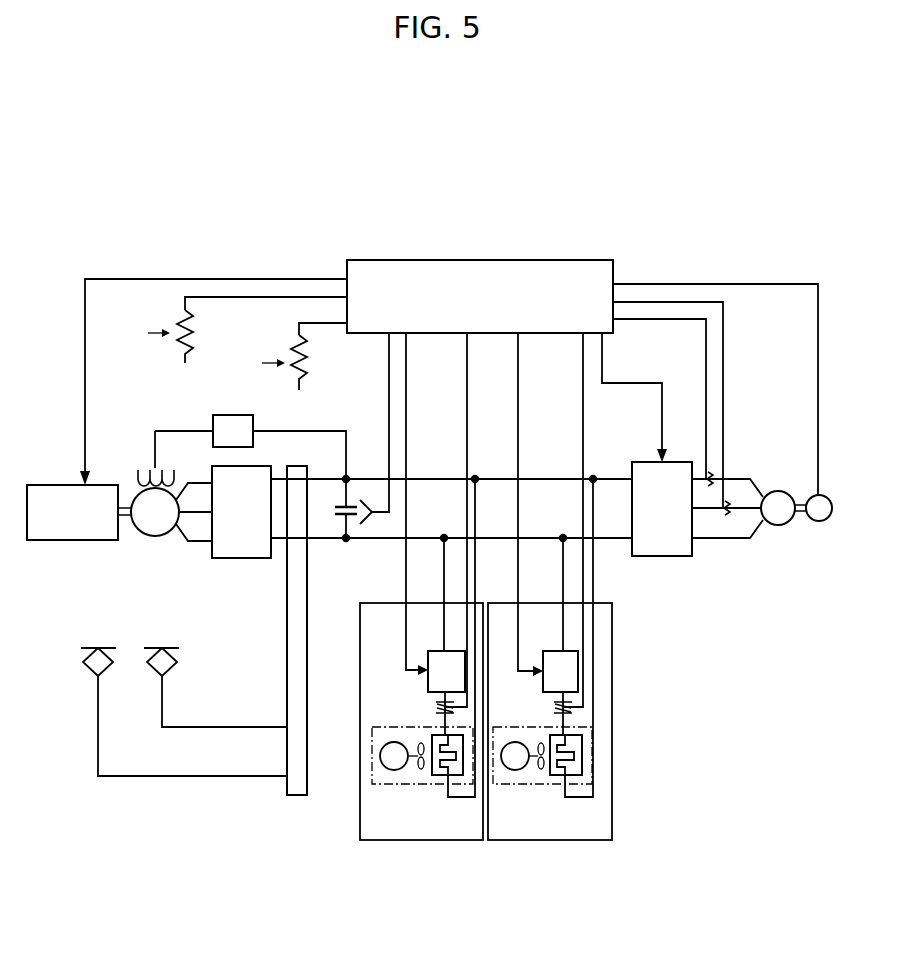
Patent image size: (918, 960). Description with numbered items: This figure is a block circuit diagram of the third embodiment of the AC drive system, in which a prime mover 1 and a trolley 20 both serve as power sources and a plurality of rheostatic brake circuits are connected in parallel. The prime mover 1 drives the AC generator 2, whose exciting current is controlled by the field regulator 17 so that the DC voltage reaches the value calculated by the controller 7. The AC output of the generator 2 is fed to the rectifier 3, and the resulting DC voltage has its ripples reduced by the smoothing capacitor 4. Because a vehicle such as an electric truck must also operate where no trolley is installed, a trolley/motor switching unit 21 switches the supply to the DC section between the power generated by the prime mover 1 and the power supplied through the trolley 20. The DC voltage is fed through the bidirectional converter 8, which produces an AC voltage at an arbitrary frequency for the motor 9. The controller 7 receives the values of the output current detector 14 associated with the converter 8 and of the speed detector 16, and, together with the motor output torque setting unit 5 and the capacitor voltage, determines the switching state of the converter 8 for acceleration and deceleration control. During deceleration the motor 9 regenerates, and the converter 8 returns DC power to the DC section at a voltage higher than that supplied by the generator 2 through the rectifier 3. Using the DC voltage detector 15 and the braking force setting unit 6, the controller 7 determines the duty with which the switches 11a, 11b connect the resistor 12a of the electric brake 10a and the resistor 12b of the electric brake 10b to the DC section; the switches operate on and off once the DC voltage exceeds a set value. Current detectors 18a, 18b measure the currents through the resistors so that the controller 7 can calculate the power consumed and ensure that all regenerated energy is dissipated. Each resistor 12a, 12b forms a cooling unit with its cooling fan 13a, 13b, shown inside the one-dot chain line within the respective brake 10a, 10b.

The prime mover 1 is at (82, 542).
The AC generator 2 is at (155, 537).
The rectifier 3 is at (255, 560).
The smoothing capacitor 4 is at (350, 476).
The motor output torque setting unit 5 is at (200, 330).
The braking force setting unit 6 is at (314, 360).
The controller 7 is at (560, 260).
The bidirectional converter 8 is at (641, 458).
The motor 9 is at (780, 490).
The electric brake a 10a is at (483, 845).
The electric brake b 10b is at (612, 845).
The switch 11a is at (428, 655).
The switch 11b is at (578, 660).
The resistor a 12a is at (437, 785).
The resistor b 12b is at (565, 785).
The cooling fan a 13a is at (385, 786).
The cooling fan b 13b is at (510, 786).
The output current detector 14 is at (730, 470).
The DC voltage detector 15 is at (380, 545).
The speed detector 16 is at (820, 522).
The field regulator 17 is at (226, 416).
The current detector 18a is at (436, 707).
The current detector 18b is at (572, 709).
The trolley 20 is at (184, 652).
The trolley/motor switching unit 21 is at (293, 800).